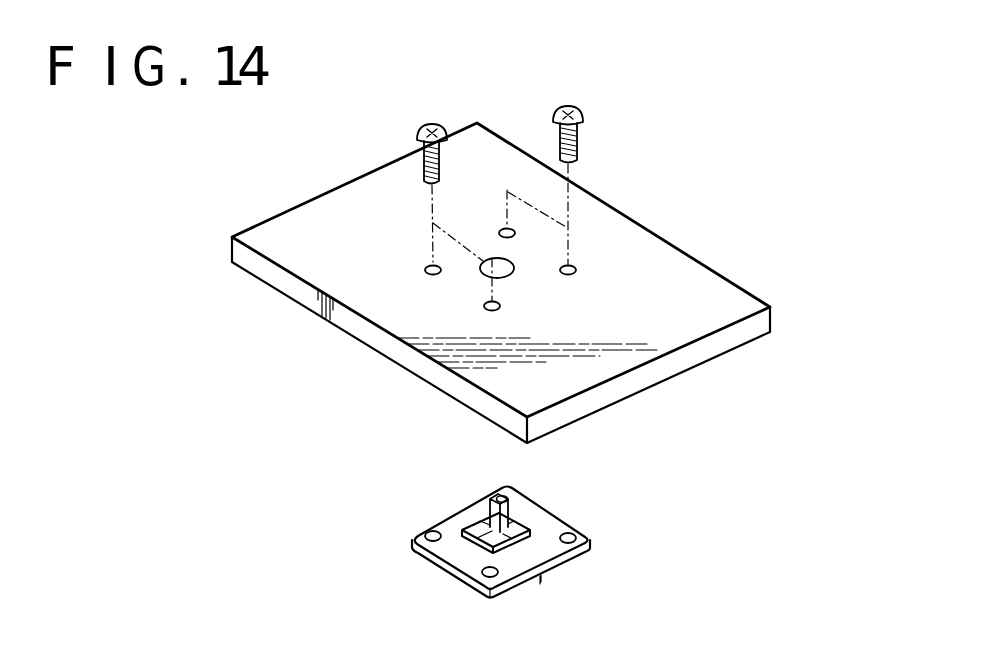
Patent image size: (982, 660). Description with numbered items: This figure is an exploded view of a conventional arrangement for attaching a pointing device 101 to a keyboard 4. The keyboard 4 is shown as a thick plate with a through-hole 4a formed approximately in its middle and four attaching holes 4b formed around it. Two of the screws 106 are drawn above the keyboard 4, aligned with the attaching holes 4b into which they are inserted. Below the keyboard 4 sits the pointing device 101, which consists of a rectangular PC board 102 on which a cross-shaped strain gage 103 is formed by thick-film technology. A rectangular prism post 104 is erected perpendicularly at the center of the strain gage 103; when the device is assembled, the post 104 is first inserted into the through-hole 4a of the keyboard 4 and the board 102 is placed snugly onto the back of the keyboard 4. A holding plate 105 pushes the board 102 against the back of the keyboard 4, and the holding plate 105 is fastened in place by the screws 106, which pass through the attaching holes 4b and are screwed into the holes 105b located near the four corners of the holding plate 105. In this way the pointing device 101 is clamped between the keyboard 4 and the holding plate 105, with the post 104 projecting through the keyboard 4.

The keyboard 4 is at (683, 267).
The through-hole 4a is at (503, 272).
The attaching holes 4b is at (425, 270).
The screws 106 is at (424, 169).
The pointing device 101 is at (518, 545).
The PC board 102 is at (524, 522).
The strain gage 103 is at (483, 535).
The post 104 is at (508, 512).
The holding plate 105 is at (592, 541).
The holes 105b is at (424, 534).